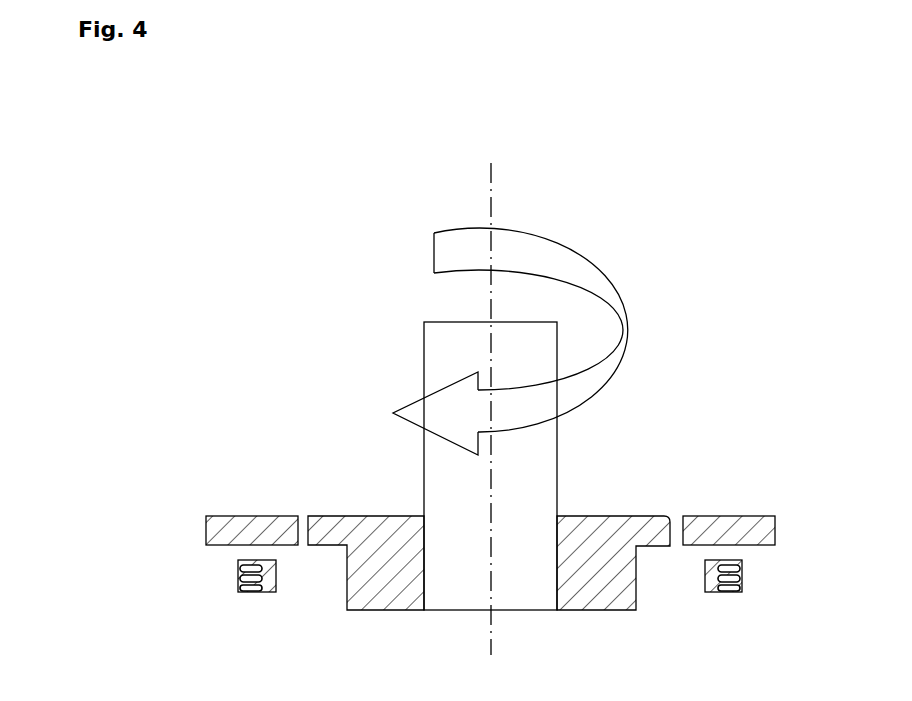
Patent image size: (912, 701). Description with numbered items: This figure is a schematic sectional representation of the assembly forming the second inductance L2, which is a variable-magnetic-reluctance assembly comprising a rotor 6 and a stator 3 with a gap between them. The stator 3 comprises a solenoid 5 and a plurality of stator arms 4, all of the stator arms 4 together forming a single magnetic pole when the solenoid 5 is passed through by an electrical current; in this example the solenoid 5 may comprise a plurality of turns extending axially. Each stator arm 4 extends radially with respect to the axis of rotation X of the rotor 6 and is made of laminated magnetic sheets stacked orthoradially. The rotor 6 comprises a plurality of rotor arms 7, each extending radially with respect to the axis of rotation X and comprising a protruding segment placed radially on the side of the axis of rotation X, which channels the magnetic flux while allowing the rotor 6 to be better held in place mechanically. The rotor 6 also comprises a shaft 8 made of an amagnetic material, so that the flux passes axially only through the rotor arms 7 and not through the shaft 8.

The stator 3 is at (472, 494).
The stator arm 4 is at (253, 530).
The solenoid 5 is at (727, 593).
The rotor 6 is at (595, 458).
The rotor arm 7 is at (368, 611).
The shaft 8 is at (452, 351).
The axis of rotation X is at (491, 187).
The second inductance L2 is at (692, 448).